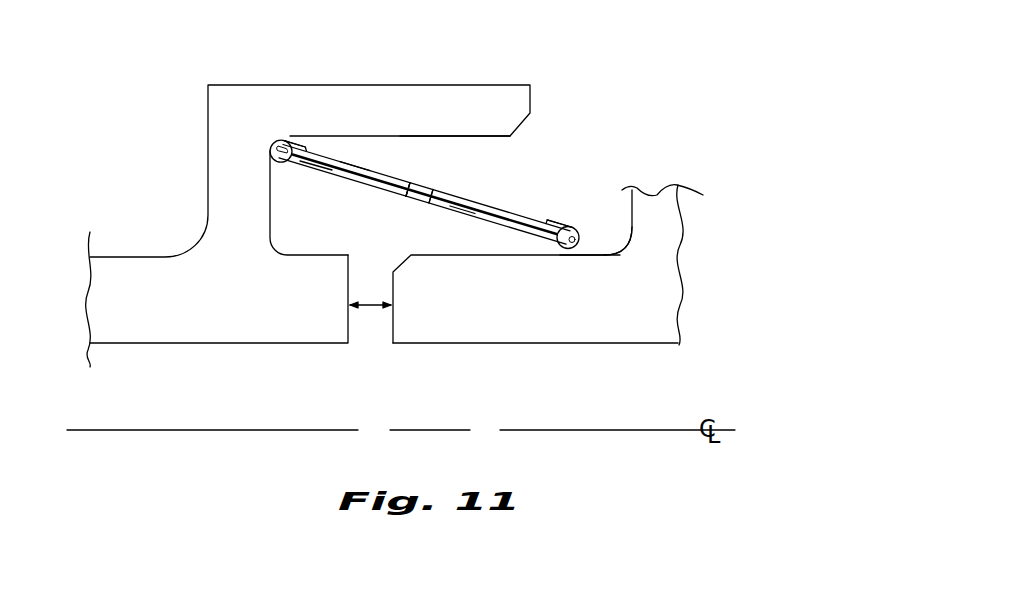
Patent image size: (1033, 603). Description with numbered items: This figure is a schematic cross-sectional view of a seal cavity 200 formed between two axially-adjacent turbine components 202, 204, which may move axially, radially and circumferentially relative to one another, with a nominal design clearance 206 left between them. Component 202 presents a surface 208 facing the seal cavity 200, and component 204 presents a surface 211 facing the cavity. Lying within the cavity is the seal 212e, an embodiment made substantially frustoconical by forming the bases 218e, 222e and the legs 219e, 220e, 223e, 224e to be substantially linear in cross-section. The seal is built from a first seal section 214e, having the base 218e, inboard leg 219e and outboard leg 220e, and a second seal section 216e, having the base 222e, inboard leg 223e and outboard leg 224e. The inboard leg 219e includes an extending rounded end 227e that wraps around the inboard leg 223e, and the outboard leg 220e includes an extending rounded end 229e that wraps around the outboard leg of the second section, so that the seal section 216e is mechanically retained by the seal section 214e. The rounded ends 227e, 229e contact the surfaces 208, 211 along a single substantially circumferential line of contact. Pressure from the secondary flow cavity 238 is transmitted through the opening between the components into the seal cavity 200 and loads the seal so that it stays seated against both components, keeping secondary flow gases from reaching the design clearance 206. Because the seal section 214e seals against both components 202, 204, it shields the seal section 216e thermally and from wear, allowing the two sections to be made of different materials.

The seal cavity 200 is at (619, 50).
The turbine component 202 is at (662, 345).
The turbine component 204 is at (210, 344).
The nominal design clearance 206 is at (372, 318).
The surface 208 is at (590, 252).
The surface 211 is at (474, 136).
The seal 212e is at (604, 157).
The seal section 214e is at (377, 203).
The seal section 216e is at (404, 170).
The base 218e is at (418, 200).
The inboard leg 219e is at (461, 226).
The outboard leg 220e is at (332, 183).
The base 222e is at (413, 189).
The inboard leg 223e is at (473, 208).
The outboard leg 224e is at (355, 166).
The rounded end 227e is at (572, 232).
The rounded end 229e is at (301, 141).
The secondary flow cavity 238 is at (527, 32).